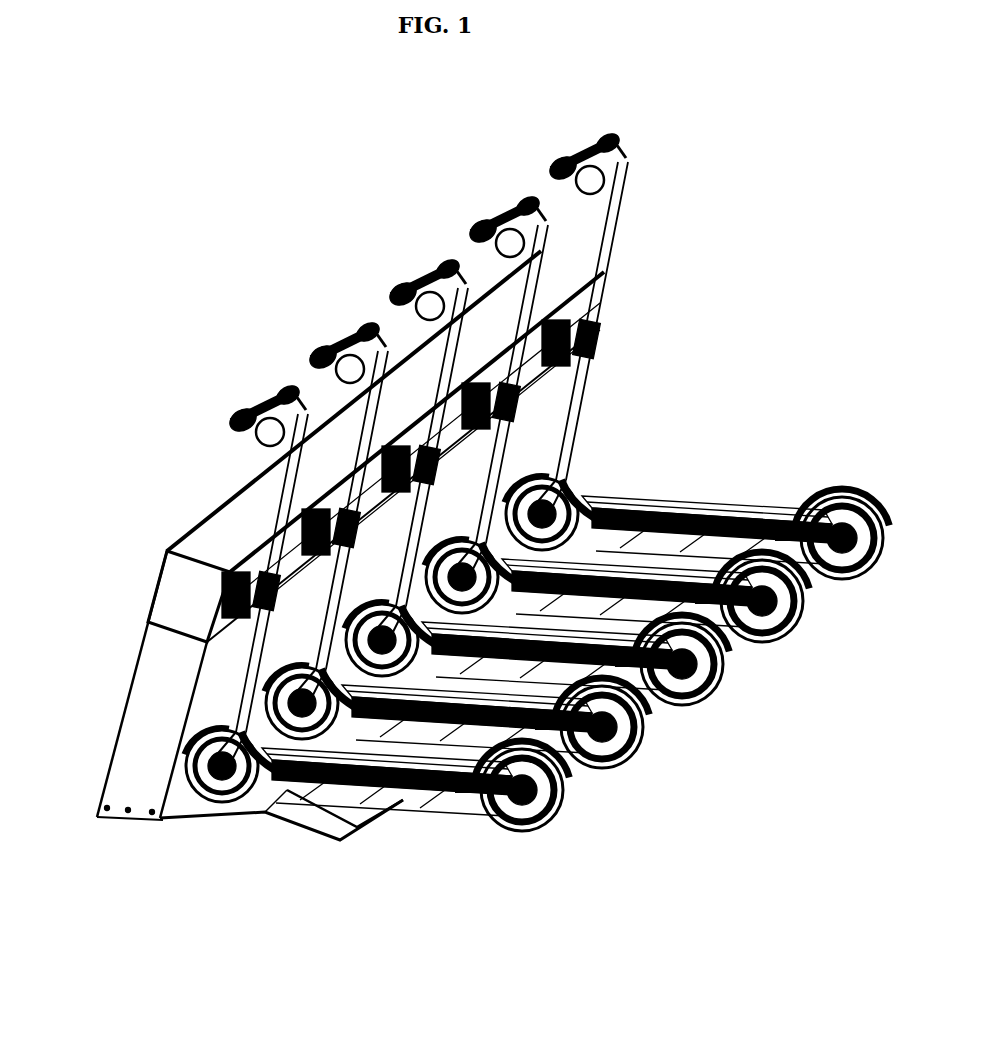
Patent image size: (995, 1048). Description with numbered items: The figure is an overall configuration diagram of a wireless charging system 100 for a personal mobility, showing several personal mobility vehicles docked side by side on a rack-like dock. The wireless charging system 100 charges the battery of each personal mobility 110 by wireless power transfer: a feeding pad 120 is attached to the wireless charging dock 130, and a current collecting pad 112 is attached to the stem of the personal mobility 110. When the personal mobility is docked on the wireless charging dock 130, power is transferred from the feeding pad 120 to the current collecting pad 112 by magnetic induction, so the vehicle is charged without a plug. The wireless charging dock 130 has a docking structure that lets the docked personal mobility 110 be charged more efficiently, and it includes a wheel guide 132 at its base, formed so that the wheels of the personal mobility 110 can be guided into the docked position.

The wireless charging system 100 is at (316, 574).
The personal mobility 110 is at (536, 480).
The current collecting pad 112 is at (623, 338).
The feeding pad 120 is at (240, 565).
The wireless charging dock 130 is at (284, 814).
The wheel guide 132 is at (345, 815).